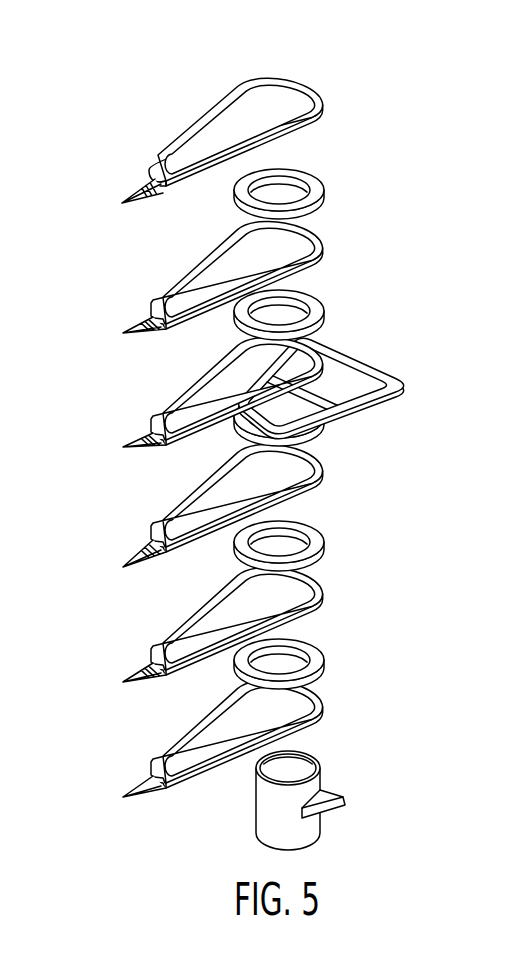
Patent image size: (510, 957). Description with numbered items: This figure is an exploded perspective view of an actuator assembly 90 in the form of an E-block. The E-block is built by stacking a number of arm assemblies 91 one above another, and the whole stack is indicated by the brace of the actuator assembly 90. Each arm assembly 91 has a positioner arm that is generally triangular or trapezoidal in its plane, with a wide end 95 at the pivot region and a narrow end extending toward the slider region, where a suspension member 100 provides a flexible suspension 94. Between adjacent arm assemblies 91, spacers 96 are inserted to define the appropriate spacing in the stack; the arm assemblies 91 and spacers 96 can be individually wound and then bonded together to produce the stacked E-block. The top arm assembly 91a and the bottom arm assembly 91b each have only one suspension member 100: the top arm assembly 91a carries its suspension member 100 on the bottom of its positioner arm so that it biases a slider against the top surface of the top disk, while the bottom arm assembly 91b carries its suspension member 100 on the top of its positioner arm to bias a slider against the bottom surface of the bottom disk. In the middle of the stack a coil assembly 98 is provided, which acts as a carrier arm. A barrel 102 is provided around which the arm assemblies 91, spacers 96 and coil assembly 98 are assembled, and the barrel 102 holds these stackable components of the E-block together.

The actuator assembly 90 is at (236, 421).
The actuator arm assembly 91 is at (328, 588).
The top arm assembly 91a is at (259, 131).
The bottom arm assembly 91b is at (330, 700).
The flexible suspension 94 is at (135, 163).
The wide end 95 is at (262, 88).
The spacer 96 is at (315, 302).
The coil assembly 98 is at (372, 362).
The suspension member 100 is at (195, 186).
The barrel 102 is at (308, 828).